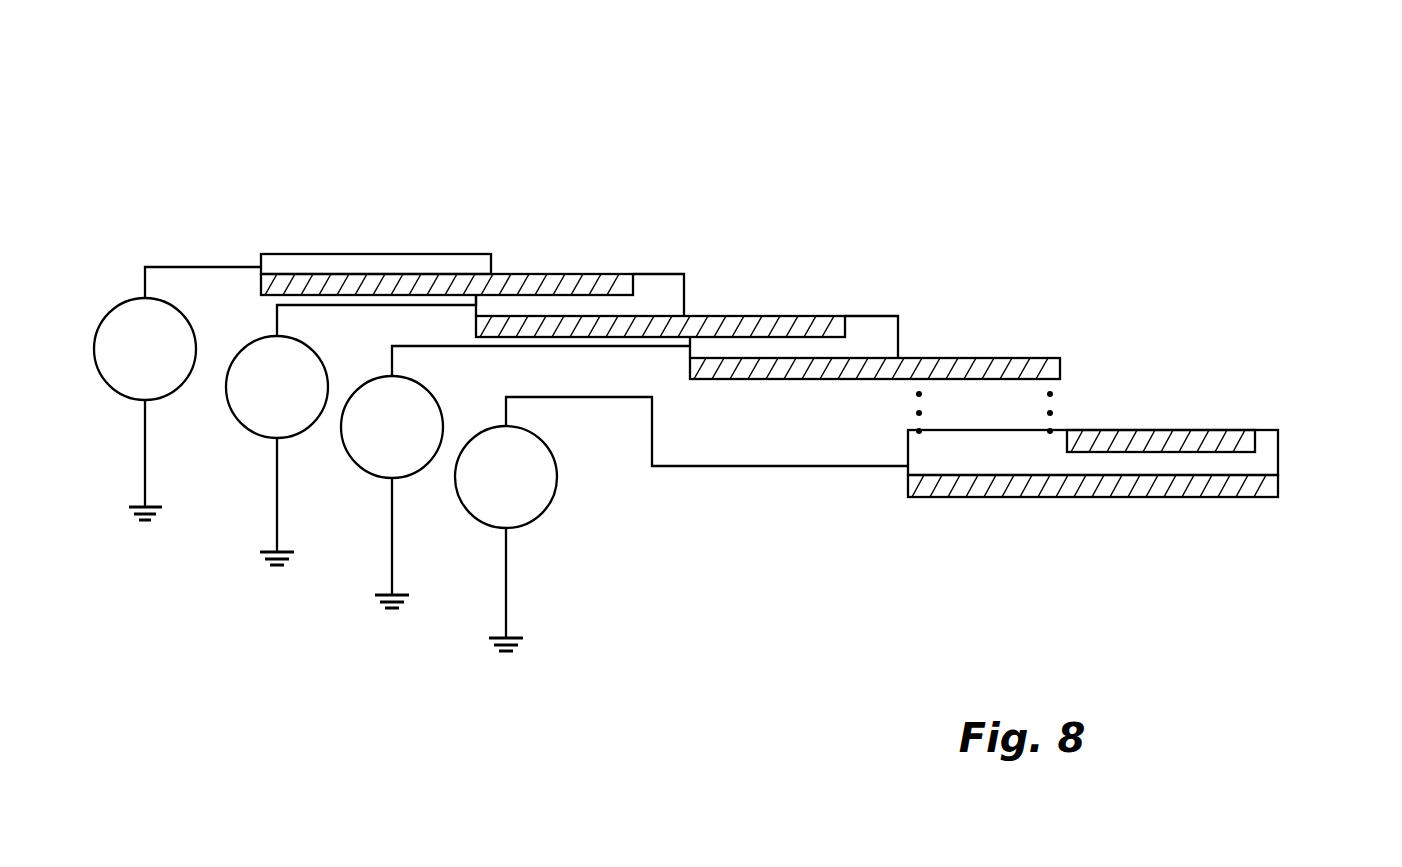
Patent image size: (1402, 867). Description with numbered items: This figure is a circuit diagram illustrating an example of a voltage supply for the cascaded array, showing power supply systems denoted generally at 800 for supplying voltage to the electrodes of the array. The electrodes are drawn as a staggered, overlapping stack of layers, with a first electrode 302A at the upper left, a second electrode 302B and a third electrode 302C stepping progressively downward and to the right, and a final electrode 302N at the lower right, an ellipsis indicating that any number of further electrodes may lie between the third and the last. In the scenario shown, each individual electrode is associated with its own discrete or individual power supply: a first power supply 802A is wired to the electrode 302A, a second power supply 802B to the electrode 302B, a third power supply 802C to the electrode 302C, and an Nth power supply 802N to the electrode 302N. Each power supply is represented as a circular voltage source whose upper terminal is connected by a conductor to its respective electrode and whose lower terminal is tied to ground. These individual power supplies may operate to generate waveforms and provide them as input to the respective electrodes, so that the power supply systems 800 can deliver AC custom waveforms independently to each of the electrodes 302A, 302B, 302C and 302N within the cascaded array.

The power supply systems 800 is at (338, 88).
The electrode 302A is at (491, 254).
The electrode 302B is at (684, 274).
The electrode 302C is at (898, 316).
The electrode 302N is at (1278, 430).
The individual power supply 802A is at (177, 393).
The individual power supply 802B is at (351, 430).
The individual power supply 802C is at (515, 477).
The individual power supply 802N is at (681, 524).